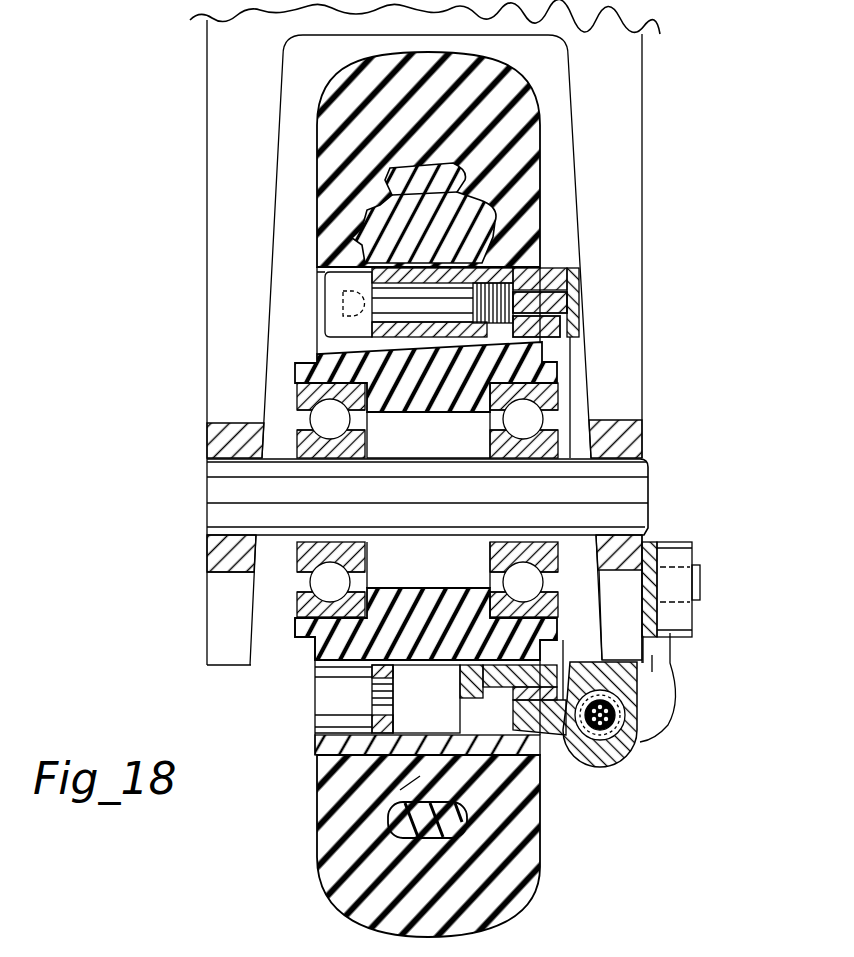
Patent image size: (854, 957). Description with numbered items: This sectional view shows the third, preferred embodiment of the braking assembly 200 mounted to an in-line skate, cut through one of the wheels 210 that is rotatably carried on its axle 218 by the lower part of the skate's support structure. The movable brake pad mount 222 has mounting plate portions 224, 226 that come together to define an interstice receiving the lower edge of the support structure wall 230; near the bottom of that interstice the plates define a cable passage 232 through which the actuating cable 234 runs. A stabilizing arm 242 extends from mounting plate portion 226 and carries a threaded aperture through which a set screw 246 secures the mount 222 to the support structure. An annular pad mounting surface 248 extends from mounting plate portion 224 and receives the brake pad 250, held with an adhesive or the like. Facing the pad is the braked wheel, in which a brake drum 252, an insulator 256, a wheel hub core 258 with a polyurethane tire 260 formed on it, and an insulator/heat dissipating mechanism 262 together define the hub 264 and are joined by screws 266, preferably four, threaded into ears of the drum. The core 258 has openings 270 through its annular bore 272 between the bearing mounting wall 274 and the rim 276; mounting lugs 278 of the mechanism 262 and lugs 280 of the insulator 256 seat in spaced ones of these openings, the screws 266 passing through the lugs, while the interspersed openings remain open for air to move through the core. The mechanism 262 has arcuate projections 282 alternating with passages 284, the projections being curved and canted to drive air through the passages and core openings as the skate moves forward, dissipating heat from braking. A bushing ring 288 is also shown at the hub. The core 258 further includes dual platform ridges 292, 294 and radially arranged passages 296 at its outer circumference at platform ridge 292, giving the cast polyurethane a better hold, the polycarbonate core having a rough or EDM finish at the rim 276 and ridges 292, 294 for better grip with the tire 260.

The braking assembly 200 is at (724, 388).
The wheel 210 is at (330, 906).
The axle 218 is at (648, 470).
The movable brake pad mount 222 is at (673, 687).
The mounting plate portion 224 is at (583, 615).
The mounting plate portion 226 is at (653, 702).
The support structure wall 230 is at (630, 648).
The cable passage 232 is at (590, 750).
The actuating cable 234 is at (600, 724).
The stabilizing arm 242 is at (678, 550).
The set screw 246 is at (700, 580).
The annular pad mounting surface 248 is at (573, 292).
The brake pad 250 is at (573, 304).
The brake drum 252 is at (560, 328).
The insulator 256 is at (540, 275).
The wheel hub core 258 is at (337, 367).
The tire 260 is at (527, 115).
The insulator/heat dissipating mechanism 262 is at (325, 276).
The hub 264 is at (292, 311).
The screws 266 is at (325, 334).
The openings 270 is at (454, 712).
The annular bore 272 is at (523, 725).
The bearing mounting wall 274 is at (330, 637).
The rim 276 is at (308, 780).
The mounting lugs 278 is at (372, 269).
The lugs 280 is at (505, 260).
The arcuate projections 282 is at (370, 697).
The passages 284 is at (337, 750).
The bushing ring 288 is at (628, 748).
The platform ridge 292 is at (377, 213).
The platform ridge 294 is at (410, 173).
The passages 296 is at (412, 783).